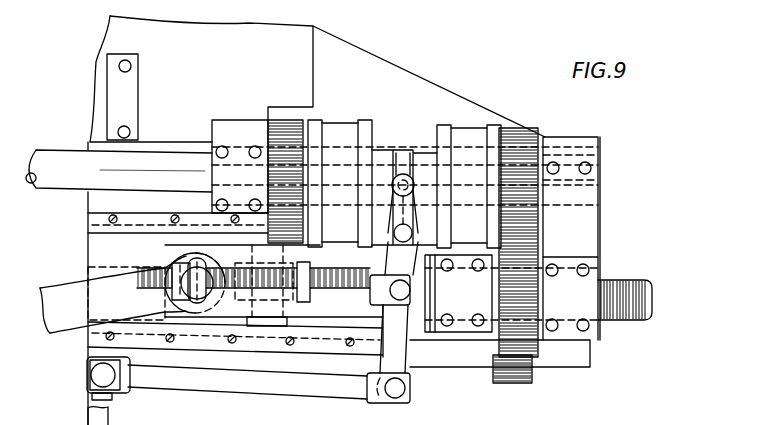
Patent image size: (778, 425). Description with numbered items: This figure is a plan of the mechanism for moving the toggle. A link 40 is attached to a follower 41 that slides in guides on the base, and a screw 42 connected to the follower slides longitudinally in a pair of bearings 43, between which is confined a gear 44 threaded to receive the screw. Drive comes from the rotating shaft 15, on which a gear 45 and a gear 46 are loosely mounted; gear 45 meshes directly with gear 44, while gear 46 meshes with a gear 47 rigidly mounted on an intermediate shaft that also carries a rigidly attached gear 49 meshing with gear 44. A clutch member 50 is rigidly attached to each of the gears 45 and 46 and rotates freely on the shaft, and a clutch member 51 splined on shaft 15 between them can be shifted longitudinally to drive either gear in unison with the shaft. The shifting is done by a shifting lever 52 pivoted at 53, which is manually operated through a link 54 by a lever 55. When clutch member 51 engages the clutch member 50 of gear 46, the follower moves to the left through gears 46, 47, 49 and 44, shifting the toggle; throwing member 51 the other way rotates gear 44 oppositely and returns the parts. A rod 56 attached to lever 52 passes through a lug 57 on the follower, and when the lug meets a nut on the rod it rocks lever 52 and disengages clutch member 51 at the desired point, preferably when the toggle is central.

The shaft 15 is at (62, 157).
The link 40 is at (78, 290).
The follower 41 is at (229, 306).
The screw 42 is at (618, 283).
The bearings 43 is at (461, 326).
The gear 44 is at (518, 380).
The gear 45 is at (540, 185).
The gear 46 is at (210, 168).
The gear 47 is at (297, 118).
The gear 49 is at (528, 133).
The clutch member 50 is at (343, 130).
The clutch member 51 is at (394, 157).
The shifting lever 52 is at (397, 334).
The pivot 53 is at (412, 231).
The link 54 is at (256, 383).
The lever 55 is at (98, 375).
The rod 56 is at (348, 288).
The lug 57 is at (190, 268).